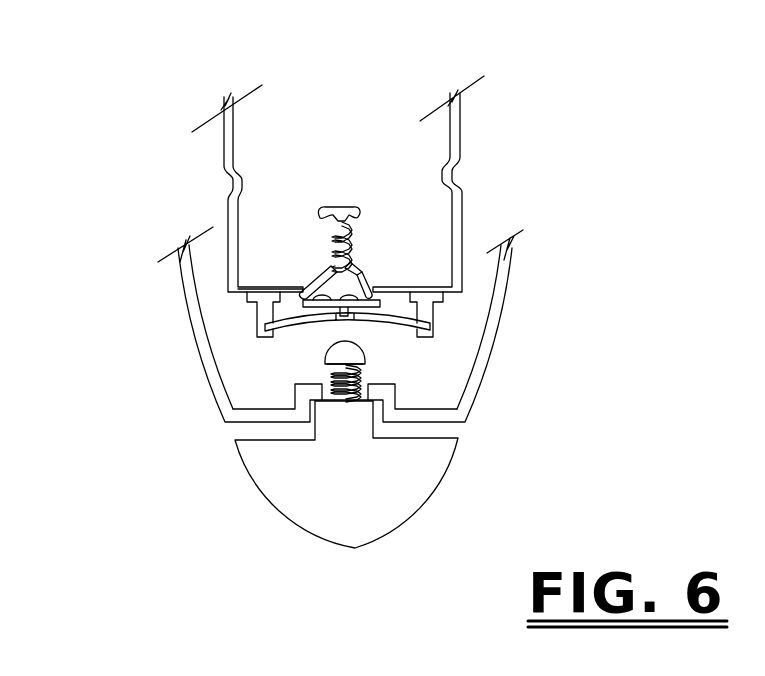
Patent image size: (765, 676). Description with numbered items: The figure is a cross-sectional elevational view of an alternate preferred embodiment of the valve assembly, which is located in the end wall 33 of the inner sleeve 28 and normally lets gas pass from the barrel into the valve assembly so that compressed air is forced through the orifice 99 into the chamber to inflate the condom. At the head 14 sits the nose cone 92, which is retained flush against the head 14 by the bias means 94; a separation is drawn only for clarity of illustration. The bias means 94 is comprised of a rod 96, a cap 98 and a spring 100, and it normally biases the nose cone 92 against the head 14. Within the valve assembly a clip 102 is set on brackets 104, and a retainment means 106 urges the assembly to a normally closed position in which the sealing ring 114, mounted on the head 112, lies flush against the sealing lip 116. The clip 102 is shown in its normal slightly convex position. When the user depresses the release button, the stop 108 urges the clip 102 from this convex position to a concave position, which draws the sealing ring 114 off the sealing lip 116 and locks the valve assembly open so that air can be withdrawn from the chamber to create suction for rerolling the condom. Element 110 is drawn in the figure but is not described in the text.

The head 14 is at (222, 492).
The inner sleeve 28 is at (224, 155).
The end wall 33 is at (278, 284).
The nose cone 92 is at (385, 510).
The bias means 94 is at (368, 374).
The rod 96 is at (316, 399).
The cap 98 is at (368, 349).
The orifice 99 is at (378, 258).
The spring 100 is at (325, 364).
The clip 102 is at (380, 315).
The brackets 104 is at (427, 297).
The retainment means 106 is at (317, 250).
The stop 108 is at (347, 207).
The coil 110 is at (333, 232).
The head 112 is at (303, 290).
The sealing ring 114 is at (323, 306).
The sealing lip 116 is at (373, 280).